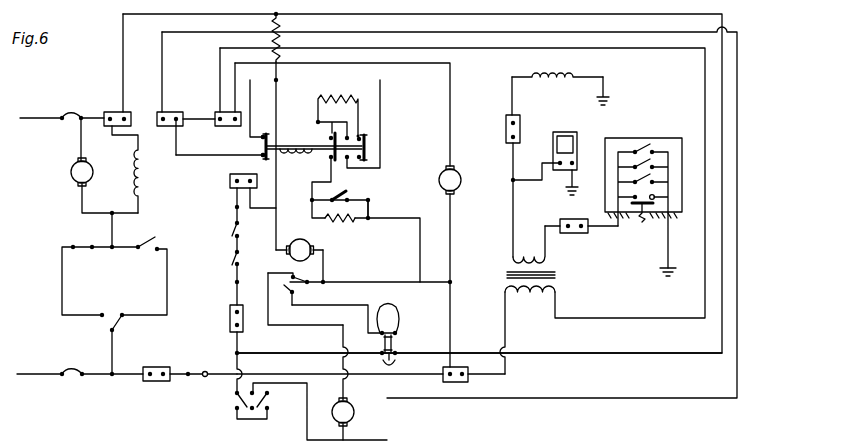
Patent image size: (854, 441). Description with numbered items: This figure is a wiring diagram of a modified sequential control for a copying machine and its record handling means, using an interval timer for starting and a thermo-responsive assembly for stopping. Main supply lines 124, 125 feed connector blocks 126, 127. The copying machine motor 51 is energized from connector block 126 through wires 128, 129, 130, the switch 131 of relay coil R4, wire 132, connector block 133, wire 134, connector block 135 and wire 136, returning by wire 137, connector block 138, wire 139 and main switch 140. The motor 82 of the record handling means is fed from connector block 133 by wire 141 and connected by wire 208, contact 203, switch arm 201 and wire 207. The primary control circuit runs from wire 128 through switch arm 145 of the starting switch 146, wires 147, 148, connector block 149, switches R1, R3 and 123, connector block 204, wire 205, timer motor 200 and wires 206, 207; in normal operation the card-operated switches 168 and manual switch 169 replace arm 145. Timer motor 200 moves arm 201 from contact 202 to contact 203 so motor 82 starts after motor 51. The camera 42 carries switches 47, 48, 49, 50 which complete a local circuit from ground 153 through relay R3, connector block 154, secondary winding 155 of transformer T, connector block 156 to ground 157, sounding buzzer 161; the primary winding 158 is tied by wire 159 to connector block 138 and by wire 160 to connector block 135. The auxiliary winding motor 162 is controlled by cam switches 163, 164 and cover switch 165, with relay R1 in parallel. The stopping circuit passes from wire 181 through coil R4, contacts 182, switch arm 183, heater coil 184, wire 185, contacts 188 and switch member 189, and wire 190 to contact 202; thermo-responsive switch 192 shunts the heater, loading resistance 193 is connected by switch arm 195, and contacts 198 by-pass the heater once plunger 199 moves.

The camera 42 is at (656, 138).
The normally open switch 47 is at (634, 221).
The normally open switch 48 is at (648, 177).
The normally open switch 49 is at (632, 165).
The normally open switch 50 is at (644, 143).
The copying machine motor 51 is at (455, 168).
The record handling means motor 82 is at (357, 404).
The switch 123 is at (234, 205).
The main supply line 124 is at (57, 117).
The main supply line 125 is at (43, 372).
The connector block 126 is at (110, 112).
The connector block 127 is at (154, 366).
The wire 128 is at (722, 14).
The wire 129 is at (271, 40).
The wire 130 is at (251, 120).
The switch 131 is at (259, 150).
The wire 132 is at (208, 156).
The connector block 133 is at (170, 112).
The wire 134 is at (208, 108).
The connector block 135 is at (222, 128).
The wire 136 is at (407, 64).
The wire 137 is at (452, 291).
The connector block 138 is at (470, 380).
The wire 139 is at (315, 373).
The main switch 140 is at (204, 371).
The wire 141 is at (686, 34).
The switch arm 145 is at (382, 356).
The double-pole manually operable switch 146 is at (397, 364).
The wire 147 is at (283, 353).
The wire 148 is at (237, 346).
The connector block 149 is at (230, 318).
The ground 153 is at (597, 99).
The connector block 154 is at (507, 115).
The secondary winding 155 is at (545, 257).
The connector block 156 is at (572, 233).
The ground 157 is at (662, 276).
The primary winding 158 is at (535, 292).
The wire 159 is at (505, 325).
The wire 160 is at (507, 49).
The buzzer 161 is at (560, 132).
The winding motor 162 is at (70, 174).
The cam operated switch 163 is at (82, 239).
The cam operated switch 164 is at (153, 240).
The single pole double throw switch 165 is at (109, 325).
The card-operated switches 168 is at (268, 401).
The normally closed manually operable switch 169 is at (234, 396).
The wire 181 is at (279, 86).
The switch contacts 182 is at (328, 158).
The switch arm 183 is at (316, 121).
The heater coil 184 is at (351, 216).
The wire 185 is at (416, 218).
The switch contacts 188 is at (390, 322).
The switch member 189 is at (393, 319).
The wire 190 is at (362, 307).
The thermo-responsive switch 192 is at (335, 220).
The loading resistance 193 is at (342, 99).
The switch arm 195 is at (367, 148).
The switch contacts 198 is at (349, 160).
The plunger 199 is at (362, 141).
The timer motor 200 is at (298, 238).
The switch arm 201 is at (371, 276).
The contact 202 is at (290, 293).
The contact 203 is at (291, 276).
The connector block 204 is at (230, 181).
The wire 205 is at (266, 208).
The wire 206 is at (324, 262).
The wire 207 is at (406, 282).
The wire 208 is at (303, 326).
The relay R1 is at (142, 178).
The relay R3 is at (546, 72).
The relay coil R4 is at (286, 153).
The transformer T is at (541, 276).